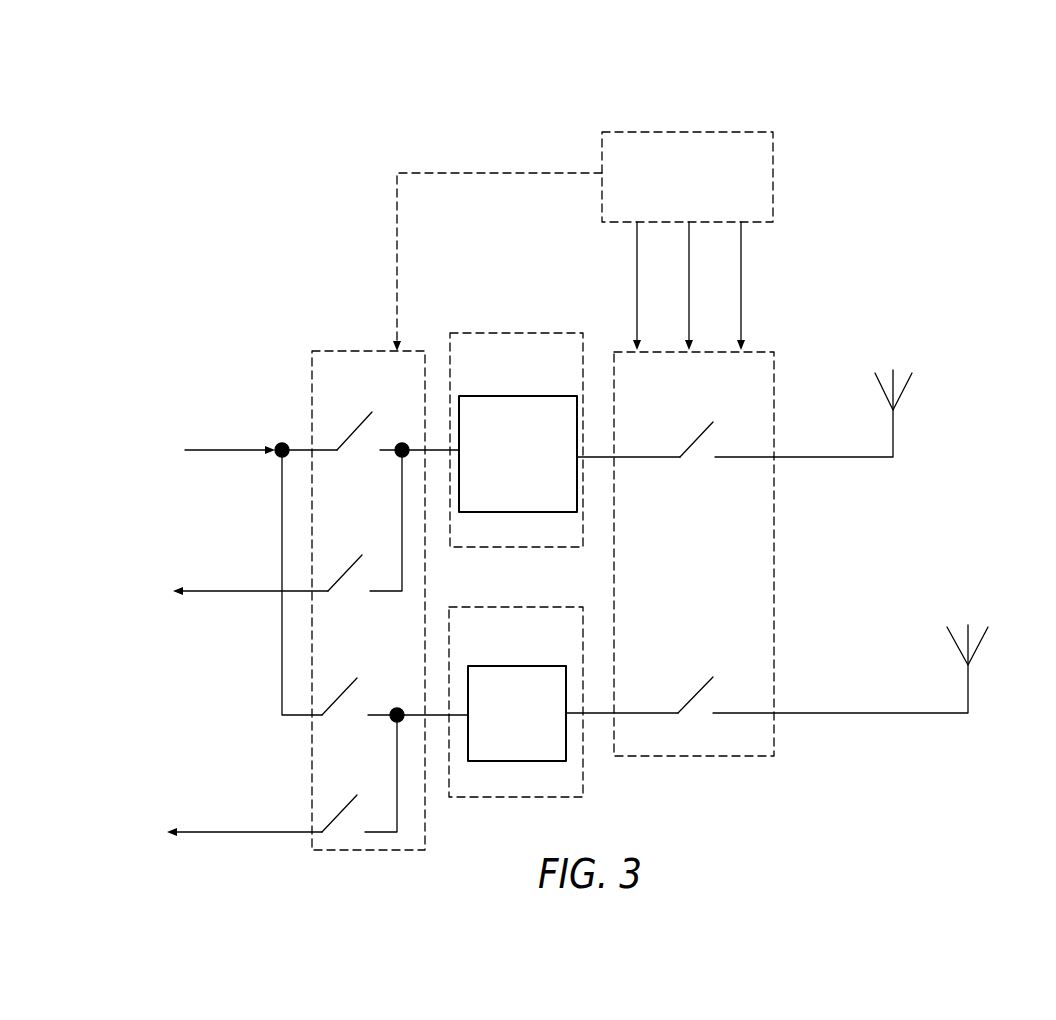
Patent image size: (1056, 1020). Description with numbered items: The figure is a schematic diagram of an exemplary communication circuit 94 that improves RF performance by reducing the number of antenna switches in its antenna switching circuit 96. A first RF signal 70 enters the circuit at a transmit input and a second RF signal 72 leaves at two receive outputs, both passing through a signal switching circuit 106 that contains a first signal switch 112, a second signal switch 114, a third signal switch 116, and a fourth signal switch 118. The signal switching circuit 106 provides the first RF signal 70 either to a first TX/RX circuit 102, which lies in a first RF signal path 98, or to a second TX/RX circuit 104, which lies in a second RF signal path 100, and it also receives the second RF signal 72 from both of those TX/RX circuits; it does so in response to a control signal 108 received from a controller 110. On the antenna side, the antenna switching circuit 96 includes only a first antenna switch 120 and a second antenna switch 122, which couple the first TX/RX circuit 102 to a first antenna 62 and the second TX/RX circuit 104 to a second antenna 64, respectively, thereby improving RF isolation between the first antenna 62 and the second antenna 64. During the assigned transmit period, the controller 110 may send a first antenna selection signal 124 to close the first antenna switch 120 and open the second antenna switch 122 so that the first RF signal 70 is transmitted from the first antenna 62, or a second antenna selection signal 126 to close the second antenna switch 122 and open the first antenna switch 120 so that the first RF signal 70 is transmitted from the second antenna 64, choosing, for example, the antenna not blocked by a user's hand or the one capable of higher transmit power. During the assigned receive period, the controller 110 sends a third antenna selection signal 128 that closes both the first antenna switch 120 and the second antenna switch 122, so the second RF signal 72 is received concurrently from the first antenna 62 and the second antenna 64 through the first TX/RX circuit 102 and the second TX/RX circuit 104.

The communication circuit 94 is at (898, 135).
The controller 110 is at (672, 132).
The control signal 108 is at (476, 178).
The first antenna selection signal 124 is at (637, 277).
The second antenna selection signal 126 is at (689, 295).
The third antenna selection signal 128 is at (741, 267).
The signal switching circuit 106 is at (333, 351).
The first RF signal 70 is at (227, 456).
The second RF signal 72 is at (226, 597).
The first signal switch 112 is at (352, 461).
The second signal switch 114 is at (347, 595).
The third signal switch 116 is at (371, 694).
The fourth signal switch 118 is at (329, 794).
The first RF signal path 98 is at (473, 333).
The first TX/RX circuit 102 is at (502, 396).
The second RF signal path 100 is at (480, 607).
The second TX/RX circuit 104 is at (488, 666).
The antenna switching circuit 96 is at (774, 382).
The first antenna switch 120 is at (687, 430).
The second antenna switch 122 is at (698, 718).
The first antenna 62 is at (905, 392).
The second antenna 64 is at (980, 647).